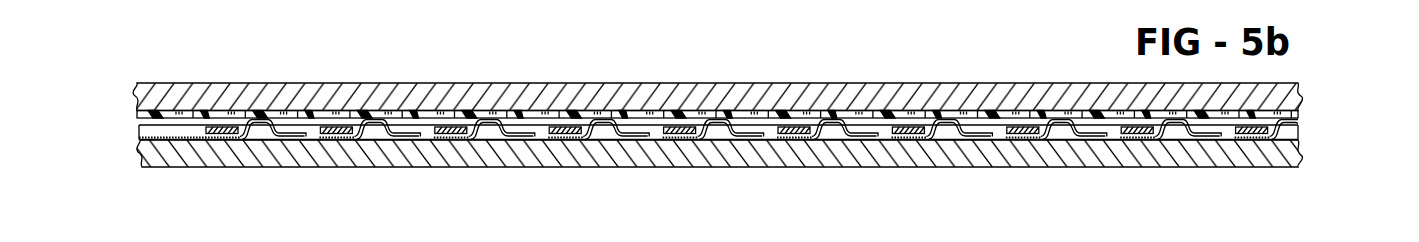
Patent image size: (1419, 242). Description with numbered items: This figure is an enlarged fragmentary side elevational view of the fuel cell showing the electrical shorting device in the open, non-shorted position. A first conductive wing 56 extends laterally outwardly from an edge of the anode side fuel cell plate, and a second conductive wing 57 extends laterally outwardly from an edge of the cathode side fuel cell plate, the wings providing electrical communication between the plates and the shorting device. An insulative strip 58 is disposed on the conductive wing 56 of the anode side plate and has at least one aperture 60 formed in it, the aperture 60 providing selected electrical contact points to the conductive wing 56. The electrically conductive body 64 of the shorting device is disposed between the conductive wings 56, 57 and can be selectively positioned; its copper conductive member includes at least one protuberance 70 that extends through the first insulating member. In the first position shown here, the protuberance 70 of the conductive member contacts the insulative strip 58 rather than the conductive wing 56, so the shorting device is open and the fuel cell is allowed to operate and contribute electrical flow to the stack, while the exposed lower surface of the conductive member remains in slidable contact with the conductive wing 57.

The first conductive wing 56 is at (1298, 98).
The second conductive wing 57 is at (1298, 152).
The insulative strip 58 is at (800, 112).
The aperture 60 is at (343, 113).
The electrically conductive body 64 is at (1300, 138).
The protuberance 70 is at (377, 121).